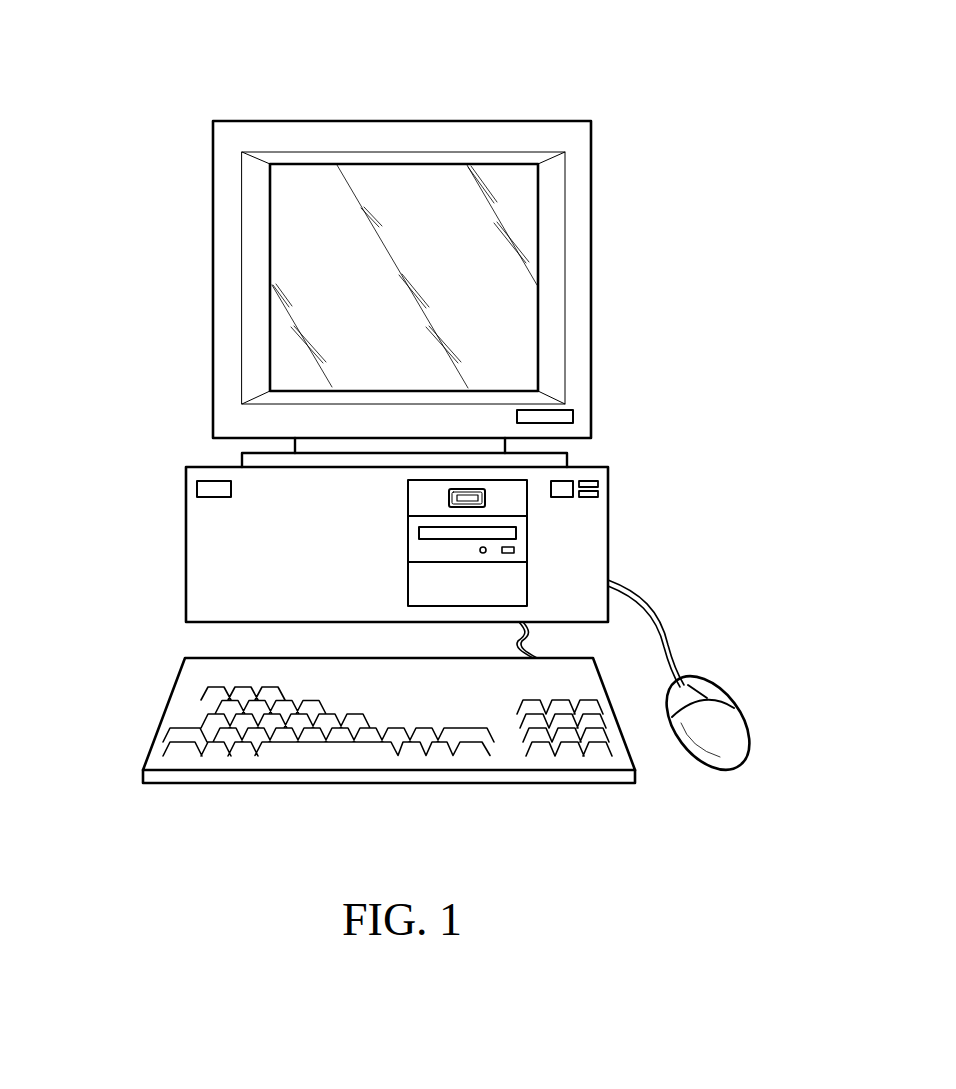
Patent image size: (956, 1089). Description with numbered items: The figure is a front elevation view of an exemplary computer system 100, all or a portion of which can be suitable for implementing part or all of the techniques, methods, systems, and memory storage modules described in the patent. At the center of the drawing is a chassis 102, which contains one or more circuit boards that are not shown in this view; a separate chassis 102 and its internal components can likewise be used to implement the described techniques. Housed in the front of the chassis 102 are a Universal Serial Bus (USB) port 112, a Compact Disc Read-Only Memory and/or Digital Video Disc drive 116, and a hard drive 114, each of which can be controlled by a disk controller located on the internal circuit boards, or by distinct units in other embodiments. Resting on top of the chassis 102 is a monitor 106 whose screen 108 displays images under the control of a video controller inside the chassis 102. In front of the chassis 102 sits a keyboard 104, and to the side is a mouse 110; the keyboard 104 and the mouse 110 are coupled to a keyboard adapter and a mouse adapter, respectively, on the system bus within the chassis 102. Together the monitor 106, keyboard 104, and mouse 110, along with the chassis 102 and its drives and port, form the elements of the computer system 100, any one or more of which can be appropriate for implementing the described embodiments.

The computer system 100 is at (585, 97).
The chassis 102 is at (185, 547).
The keyboard 104 is at (165, 707).
The monitor 106 is at (292, 122).
The screen 108 is at (318, 282).
The mouse 110 is at (725, 715).
The Universal Serial Bus (USB) port 112 is at (486, 495).
The hard drive 114 is at (517, 582).
The Compact Disc Read-Only Memory (CD-ROM) and/or Digital Video Disc (DVD) drive 116 is at (517, 540).